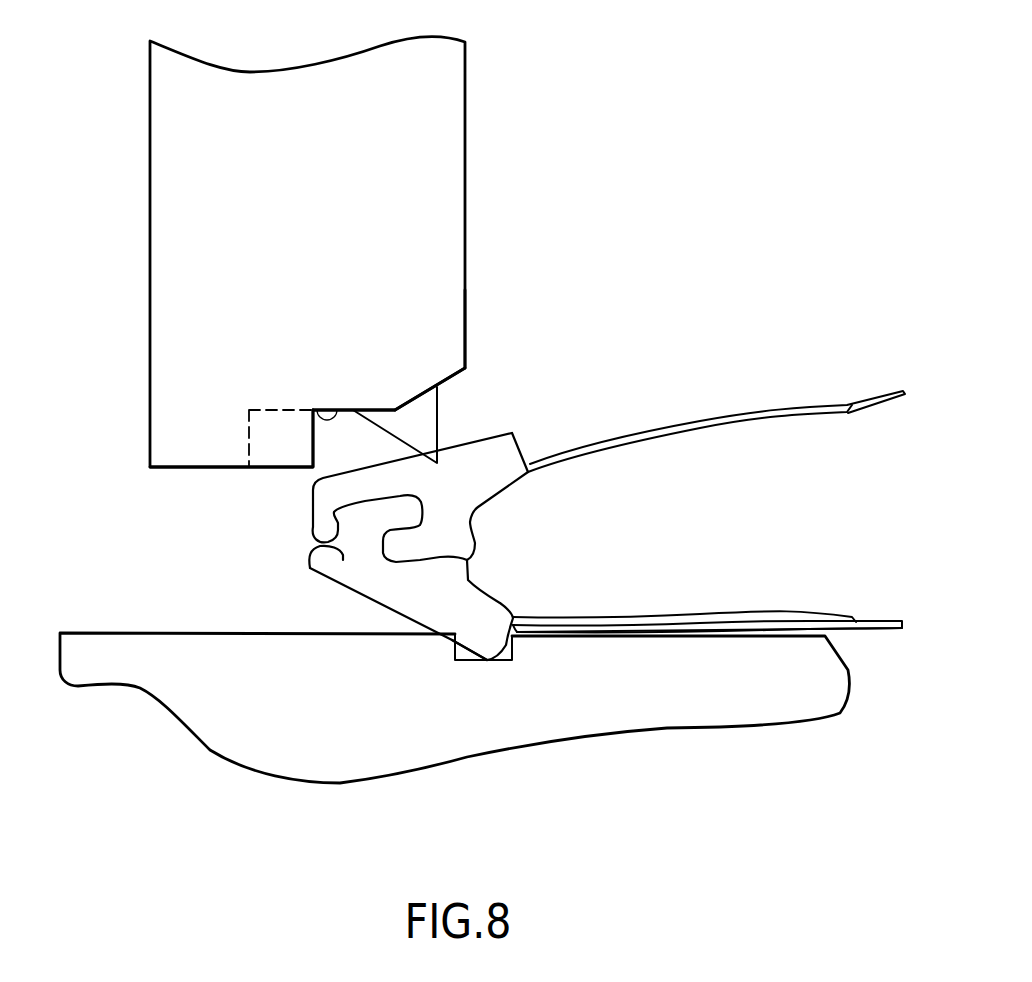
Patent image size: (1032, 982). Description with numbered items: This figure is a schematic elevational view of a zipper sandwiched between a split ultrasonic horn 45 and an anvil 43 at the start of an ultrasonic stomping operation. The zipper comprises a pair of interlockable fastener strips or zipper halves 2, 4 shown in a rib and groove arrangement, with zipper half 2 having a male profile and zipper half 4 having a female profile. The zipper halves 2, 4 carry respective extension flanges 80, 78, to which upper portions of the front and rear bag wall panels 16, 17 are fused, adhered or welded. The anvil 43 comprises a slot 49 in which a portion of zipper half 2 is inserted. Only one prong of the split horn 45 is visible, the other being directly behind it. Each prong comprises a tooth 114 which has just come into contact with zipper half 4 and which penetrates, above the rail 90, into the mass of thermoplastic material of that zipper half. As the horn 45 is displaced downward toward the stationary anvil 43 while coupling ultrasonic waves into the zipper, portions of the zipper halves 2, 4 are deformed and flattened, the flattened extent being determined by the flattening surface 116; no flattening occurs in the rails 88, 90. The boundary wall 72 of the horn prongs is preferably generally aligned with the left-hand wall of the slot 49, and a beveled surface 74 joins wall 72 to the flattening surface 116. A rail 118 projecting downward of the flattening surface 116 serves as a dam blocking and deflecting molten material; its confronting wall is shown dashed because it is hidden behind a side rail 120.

The zipper half 2 is at (352, 590).
The zipper half 4 is at (310, 507).
The front bag wall panel 16 is at (887, 629).
The rear bag wall panel 17 is at (890, 393).
The anvil 43 is at (58, 651).
The split ultrasonic horn 45 is at (467, 136).
The slot 49 is at (497, 661).
The boundary wall 72 is at (467, 313).
The beveled surface 74 is at (452, 376).
The extension flange 78 is at (810, 421).
The extension flange 80 is at (640, 617).
The rail 88 is at (488, 622).
The rail 90 is at (513, 433).
The tooth 114 is at (390, 435).
The flattening surface 116 is at (318, 408).
The rail 118 is at (257, 437).
The side rail 120 is at (273, 470).